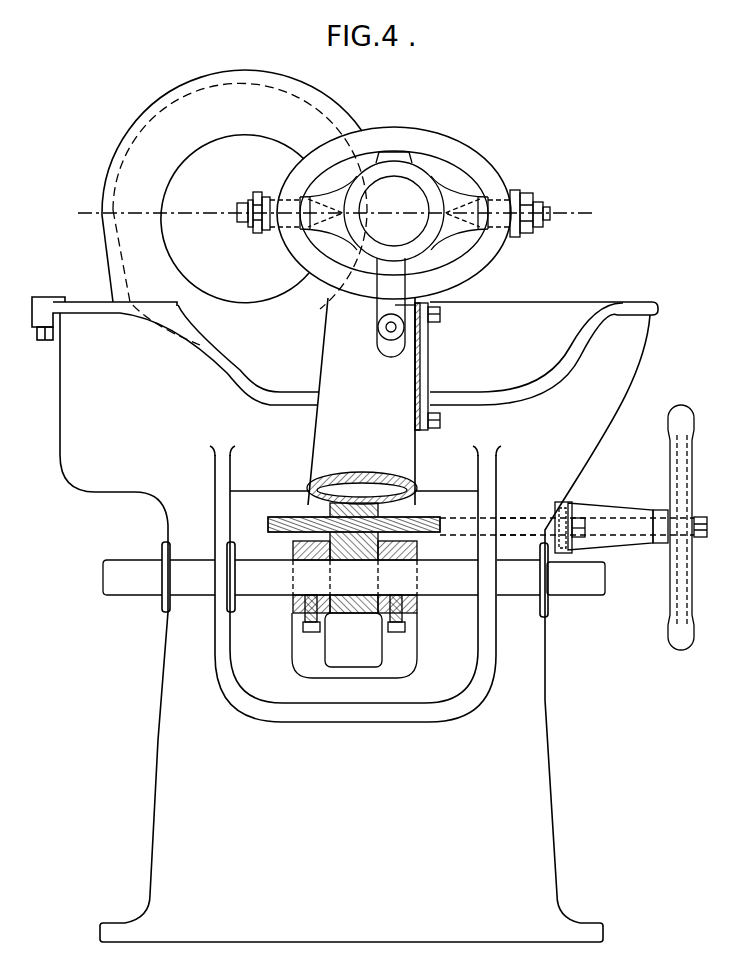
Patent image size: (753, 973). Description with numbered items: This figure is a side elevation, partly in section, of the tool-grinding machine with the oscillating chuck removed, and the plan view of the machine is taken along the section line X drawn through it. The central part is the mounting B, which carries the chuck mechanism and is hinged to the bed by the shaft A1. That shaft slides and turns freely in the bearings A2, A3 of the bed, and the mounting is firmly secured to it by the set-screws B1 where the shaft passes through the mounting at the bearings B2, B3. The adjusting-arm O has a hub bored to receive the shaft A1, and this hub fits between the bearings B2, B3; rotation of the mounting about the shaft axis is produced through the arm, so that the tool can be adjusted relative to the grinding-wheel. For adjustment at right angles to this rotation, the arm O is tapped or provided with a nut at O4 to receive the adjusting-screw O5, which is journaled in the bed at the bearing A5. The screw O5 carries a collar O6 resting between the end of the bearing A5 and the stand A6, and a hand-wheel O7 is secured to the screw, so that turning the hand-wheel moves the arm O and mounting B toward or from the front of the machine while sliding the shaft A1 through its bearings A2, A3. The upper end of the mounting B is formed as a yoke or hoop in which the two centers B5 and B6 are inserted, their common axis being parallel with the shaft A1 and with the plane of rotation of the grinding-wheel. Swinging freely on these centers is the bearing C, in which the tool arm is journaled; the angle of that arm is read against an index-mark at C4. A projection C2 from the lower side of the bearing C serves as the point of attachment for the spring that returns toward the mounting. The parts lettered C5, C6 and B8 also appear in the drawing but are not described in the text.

The section line X X is at (335, 214).
The bearing C is at (394, 213).
The index-mark C4 is at (394, 157).
The center B6 is at (242, 200).
The center B5 is at (546, 205).
The projection C2 is at (391, 346).
The guide plate C5 is at (430, 357).
The upper bolt of guide plate C6 is at (440, 315).
The lower bolt of guide plate B8 is at (440, 421).
The mounting B is at (361, 401).
The nut O4 is at (362, 492).
The adjusting-arm O is at (354, 590).
The bearing B3 is at (311, 574).
The bearing B2 is at (397, 574).
The set-screws B1 is at (306, 633).
The bearing A3 is at (290, 577).
The bearing A2 is at (518, 578).
The shaft A1 is at (576, 578).
The adjusting-screw O5 is at (481, 517).
The bearing A5 is at (515, 527).
The collar O6 is at (560, 512).
The stand A6 is at (628, 513).
The hand-wheel O7 is at (698, 527).